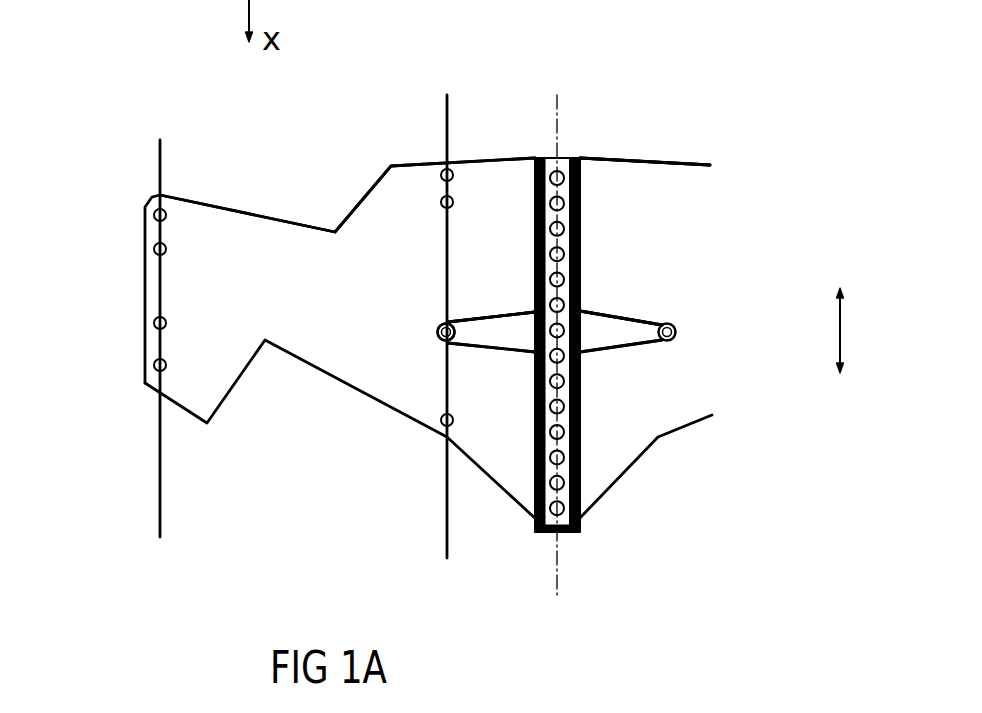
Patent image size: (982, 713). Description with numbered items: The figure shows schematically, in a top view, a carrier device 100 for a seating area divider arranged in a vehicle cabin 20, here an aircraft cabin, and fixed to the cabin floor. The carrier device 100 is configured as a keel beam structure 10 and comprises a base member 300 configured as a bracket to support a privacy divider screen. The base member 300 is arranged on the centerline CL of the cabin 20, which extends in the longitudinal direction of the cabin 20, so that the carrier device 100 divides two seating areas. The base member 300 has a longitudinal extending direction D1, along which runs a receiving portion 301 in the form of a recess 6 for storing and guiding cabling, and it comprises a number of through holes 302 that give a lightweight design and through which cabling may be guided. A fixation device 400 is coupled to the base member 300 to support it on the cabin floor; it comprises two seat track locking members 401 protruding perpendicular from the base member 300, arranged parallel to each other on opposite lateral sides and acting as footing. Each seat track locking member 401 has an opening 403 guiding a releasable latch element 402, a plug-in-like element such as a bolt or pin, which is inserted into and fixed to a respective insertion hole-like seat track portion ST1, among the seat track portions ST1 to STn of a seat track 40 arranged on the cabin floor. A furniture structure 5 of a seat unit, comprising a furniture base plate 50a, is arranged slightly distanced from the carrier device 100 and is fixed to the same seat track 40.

The carrier device 100 is at (649, 96).
The keel beam structure 10 is at (664, 144).
The vehicle cabin 20 is at (739, 109).
The furniture structure 5 is at (264, 213).
The recess 6 is at (566, 155).
The seat track 40 is at (156, 152).
The furniture base plate 50a is at (186, 295).
The base member 300 is at (621, 235).
The receiving portion 301 is at (582, 172).
The through holes 302 is at (580, 257).
The fixation device 400 is at (638, 398).
The seat track locking members 401 is at (508, 316).
The releasable latch element 402 is at (436, 330).
The opening 403 is at (436, 340).
The seat track portion ST1 is at (440, 325).
The seat track portion STn is at (443, 233).
The centerline CL is at (555, 100).
The longitudinal extending direction D1 is at (861, 330).